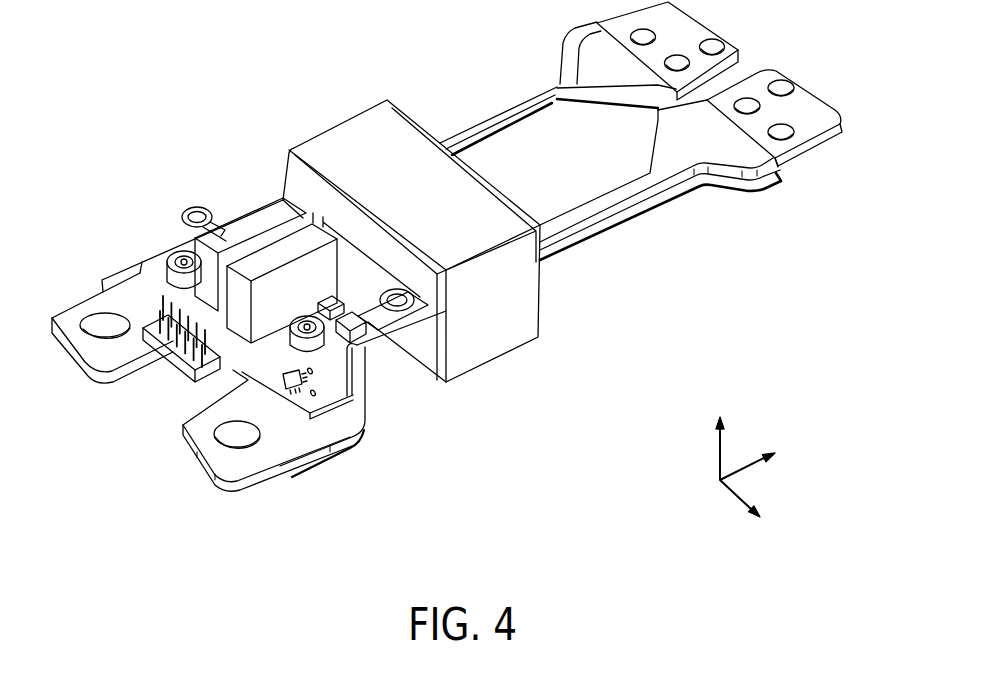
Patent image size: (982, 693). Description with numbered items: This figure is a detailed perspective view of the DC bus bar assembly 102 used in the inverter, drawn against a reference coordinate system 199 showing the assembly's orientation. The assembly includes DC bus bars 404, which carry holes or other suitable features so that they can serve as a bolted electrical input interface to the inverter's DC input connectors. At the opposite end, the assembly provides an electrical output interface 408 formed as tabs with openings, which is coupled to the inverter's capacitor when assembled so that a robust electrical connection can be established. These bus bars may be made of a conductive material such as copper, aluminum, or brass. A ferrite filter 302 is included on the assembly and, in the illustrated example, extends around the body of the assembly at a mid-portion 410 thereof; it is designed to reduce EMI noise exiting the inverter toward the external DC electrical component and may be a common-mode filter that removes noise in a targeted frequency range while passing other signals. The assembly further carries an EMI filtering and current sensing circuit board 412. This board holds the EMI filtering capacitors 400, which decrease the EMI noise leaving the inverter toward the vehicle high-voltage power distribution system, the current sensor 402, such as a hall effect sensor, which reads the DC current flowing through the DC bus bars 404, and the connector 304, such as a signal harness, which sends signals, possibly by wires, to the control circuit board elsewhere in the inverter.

The DC bus bar assembly 102 is at (432, 72).
The coordinate system 199 is at (748, 441).
The ferrite filter 302 is at (542, 327).
The connector 304 is at (160, 372).
The EMI filtering capacitors 400 is at (340, 277).
The current sensor 402 is at (329, 390).
The DC bus bars 404 is at (283, 472).
The electrical output interface 408 is at (810, 156).
The mid-portion 410 is at (564, 268).
The EMI filtering and current sensing circuit board 412 is at (264, 163).